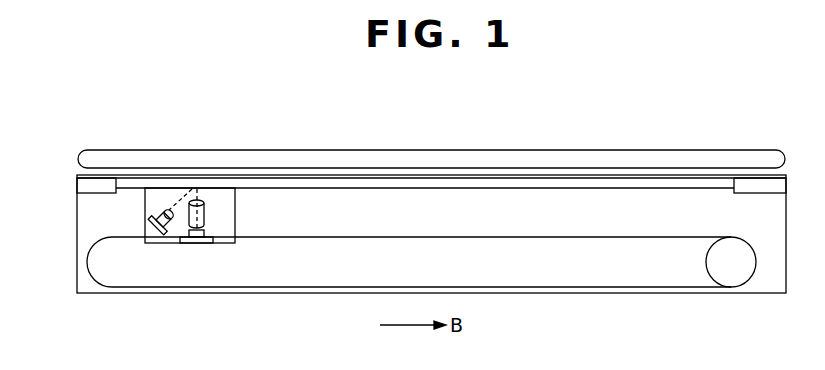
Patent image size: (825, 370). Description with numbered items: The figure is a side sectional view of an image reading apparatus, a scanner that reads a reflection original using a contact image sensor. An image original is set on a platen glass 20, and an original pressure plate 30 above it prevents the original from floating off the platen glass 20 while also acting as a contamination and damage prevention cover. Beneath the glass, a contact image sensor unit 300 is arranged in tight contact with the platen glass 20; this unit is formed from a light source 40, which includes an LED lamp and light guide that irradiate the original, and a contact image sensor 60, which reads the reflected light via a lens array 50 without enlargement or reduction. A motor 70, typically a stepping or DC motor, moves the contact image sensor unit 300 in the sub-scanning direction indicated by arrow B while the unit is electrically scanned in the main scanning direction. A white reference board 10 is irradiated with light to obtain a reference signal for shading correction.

The white reference board 10 is at (133, 192).
The platen glass 20 is at (282, 186).
The original pressure plate 30 is at (414, 153).
The light source 40 is at (170, 207).
The lens array 50 is at (218, 200).
The contact image sensor 60 is at (197, 244).
The motor 70 is at (732, 277).
The contact image sensor unit 300 is at (220, 210).